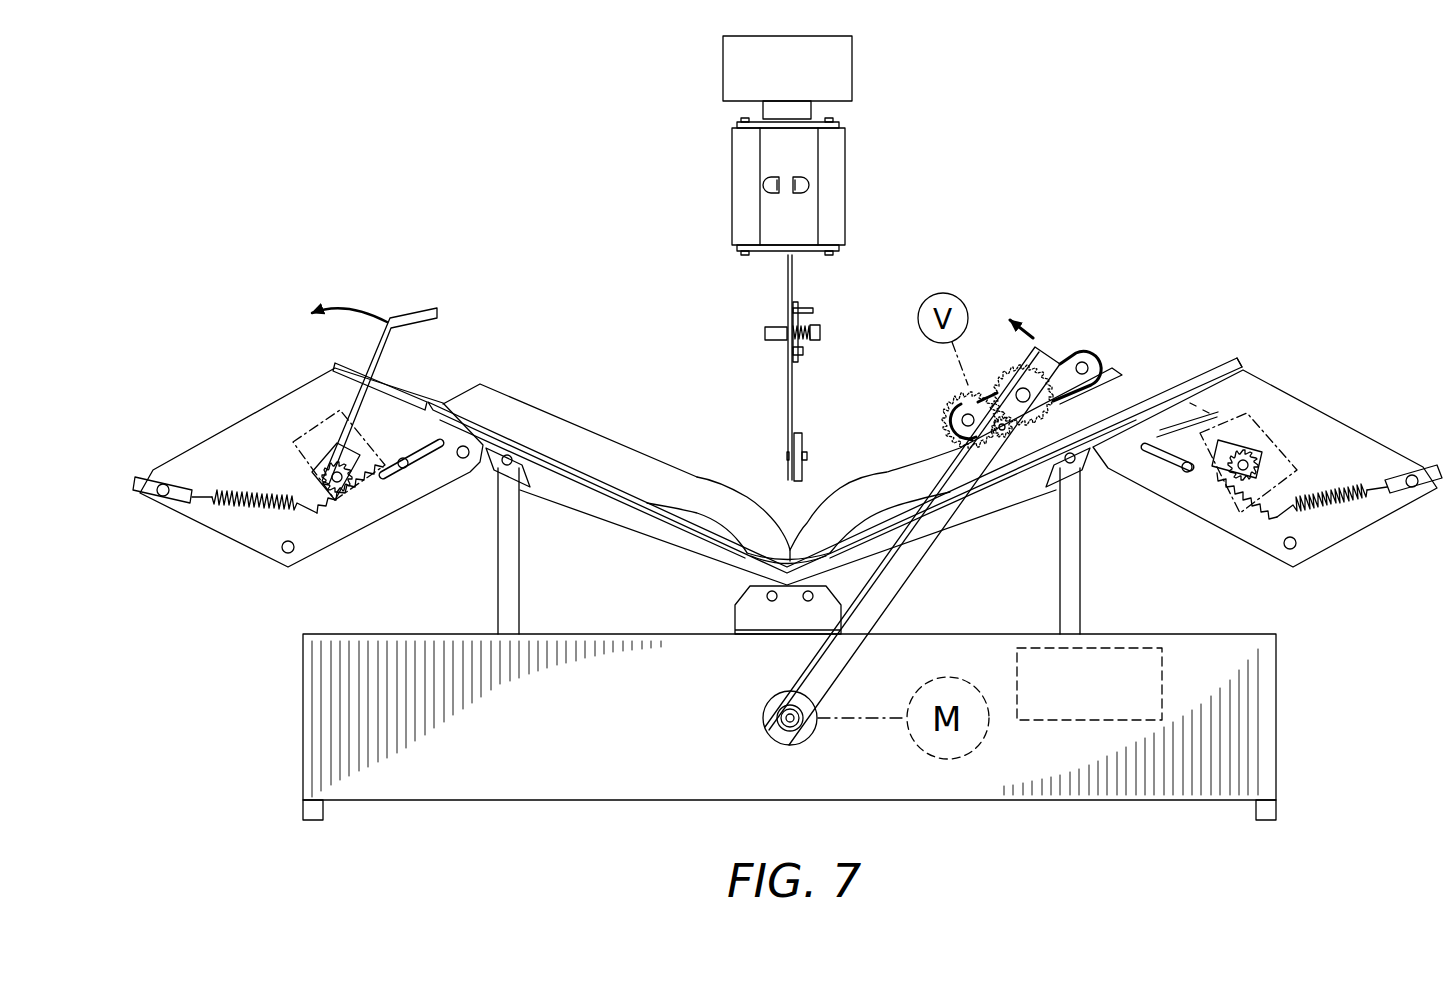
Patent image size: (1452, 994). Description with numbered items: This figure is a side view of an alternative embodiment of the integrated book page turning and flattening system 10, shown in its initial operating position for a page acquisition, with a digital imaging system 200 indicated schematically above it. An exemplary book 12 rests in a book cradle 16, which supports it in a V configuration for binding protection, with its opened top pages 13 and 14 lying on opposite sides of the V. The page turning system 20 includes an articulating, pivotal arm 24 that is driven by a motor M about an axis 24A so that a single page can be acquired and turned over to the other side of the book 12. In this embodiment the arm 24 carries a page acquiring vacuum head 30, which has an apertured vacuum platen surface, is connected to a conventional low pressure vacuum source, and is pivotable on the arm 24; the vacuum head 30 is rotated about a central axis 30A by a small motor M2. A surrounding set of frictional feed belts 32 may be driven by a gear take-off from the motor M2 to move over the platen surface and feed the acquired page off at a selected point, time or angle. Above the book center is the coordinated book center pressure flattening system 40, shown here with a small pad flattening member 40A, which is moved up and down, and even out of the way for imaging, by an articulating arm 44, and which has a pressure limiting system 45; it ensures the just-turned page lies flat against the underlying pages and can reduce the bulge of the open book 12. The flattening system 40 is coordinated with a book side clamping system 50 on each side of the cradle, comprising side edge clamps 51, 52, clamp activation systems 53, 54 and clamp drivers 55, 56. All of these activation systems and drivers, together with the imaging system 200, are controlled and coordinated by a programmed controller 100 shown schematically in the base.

The integrated book page turning and flattening system 10 is at (468, 200).
The book 12 is at (605, 460).
The opened page 13 is at (903, 465).
The opened page 14 is at (537, 412).
The book cradle 16 is at (663, 542).
The page turning system 20 is at (879, 595).
The articulating arm 24 is at (812, 660).
The axis 24A is at (793, 727).
The page acquiring vacuum head 30 is at (1080, 360).
The central axis 30A is at (1024, 402).
The driven belts 32 is at (1050, 362).
The book center pressure flattening system 40 is at (806, 258).
The pad flattening member 40A is at (775, 213).
The articulating arm 44 is at (785, 385).
The pressure limiting system 45 is at (812, 328).
The book side clamping system 50 is at (293, 417).
The side edge clamp 51 is at (1110, 362).
The side edge clamp 52 is at (417, 315).
The clamp activation system 53 is at (1238, 483).
The clamp activation system 54 is at (347, 483).
The clamp driver 55 is at (1290, 450).
The clamp driver 56 is at (293, 442).
The programmed controller 100 is at (1118, 648).
The digital imaging system 200 is at (853, 73).
The small motor M2 is at (983, 380).